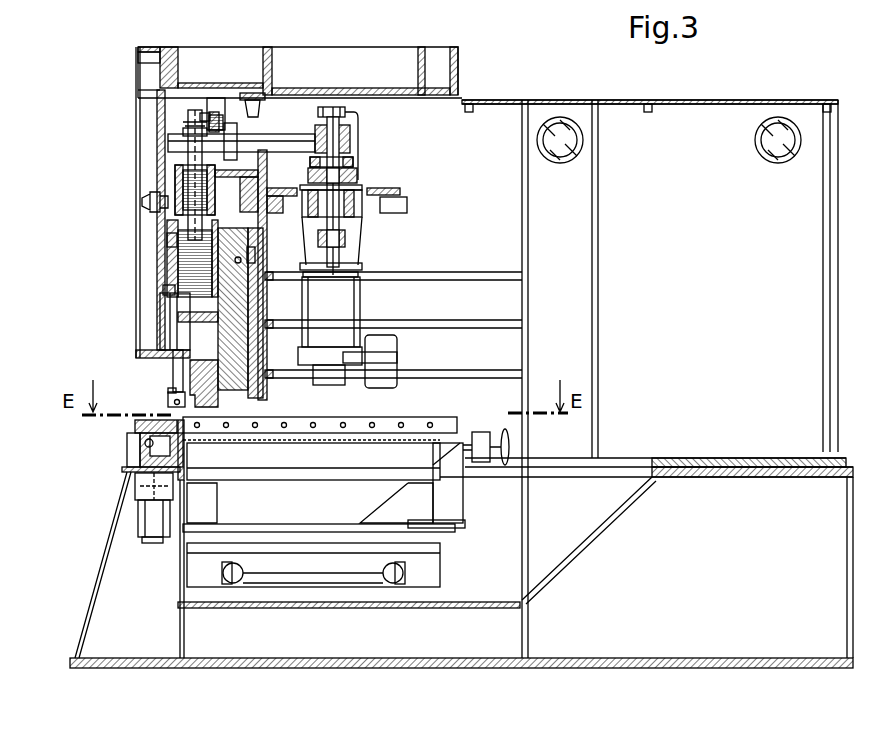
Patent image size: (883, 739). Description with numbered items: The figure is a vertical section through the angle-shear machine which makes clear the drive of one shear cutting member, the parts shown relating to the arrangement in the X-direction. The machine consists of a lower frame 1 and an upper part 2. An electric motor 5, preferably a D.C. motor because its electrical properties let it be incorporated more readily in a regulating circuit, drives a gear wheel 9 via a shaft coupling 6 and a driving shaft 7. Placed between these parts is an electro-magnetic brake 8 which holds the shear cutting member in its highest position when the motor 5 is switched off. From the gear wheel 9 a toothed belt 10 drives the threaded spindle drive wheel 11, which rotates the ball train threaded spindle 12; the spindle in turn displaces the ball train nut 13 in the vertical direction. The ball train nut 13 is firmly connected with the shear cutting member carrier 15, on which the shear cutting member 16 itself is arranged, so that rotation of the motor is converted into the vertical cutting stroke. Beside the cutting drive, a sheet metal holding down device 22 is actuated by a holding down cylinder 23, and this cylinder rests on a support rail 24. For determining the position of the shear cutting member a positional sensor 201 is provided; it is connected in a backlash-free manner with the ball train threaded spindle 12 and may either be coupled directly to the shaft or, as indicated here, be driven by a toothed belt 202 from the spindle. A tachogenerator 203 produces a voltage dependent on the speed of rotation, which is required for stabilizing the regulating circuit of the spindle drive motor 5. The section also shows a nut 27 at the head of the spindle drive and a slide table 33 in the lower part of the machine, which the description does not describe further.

The lower frame 1 is at (228, 662).
The upper part 2 is at (525, 100).
The electric motor 5 is at (357, 308).
The shaft coupling 6 is at (343, 237).
The driving shaft 7 is at (333, 197).
The electro-magnetic brake 8 is at (355, 162).
The gear wheel 9 is at (350, 136).
The toothed belt 10 is at (286, 130).
The threaded spindle drive wheel 11 is at (170, 147).
The ball train threaded spindle 12 is at (167, 235).
The ball train nut 13 is at (183, 244).
The shear cutting member carrier 15 is at (190, 374).
The shear cutting member 16 is at (170, 400).
The sheet metal holding down device 22 is at (170, 392).
The holding down cylinder 23 is at (167, 337).
The support rail 24 is at (160, 267).
The nut 27 is at (193, 133).
The slide table 33 is at (315, 502).
The positional sensor 201 is at (213, 100).
The toothed belt 202 is at (197, 127).
The tachogenerator 203 is at (212, 118).